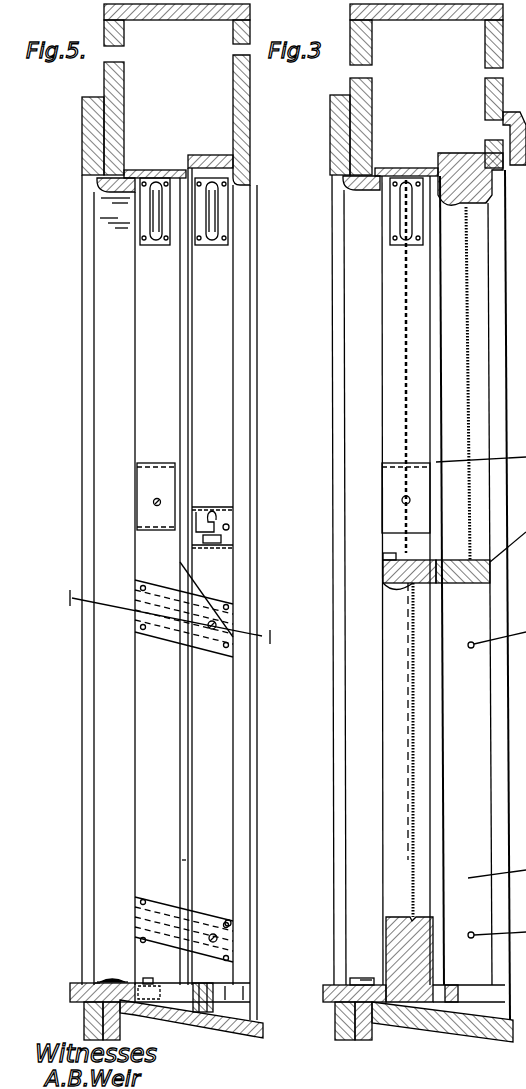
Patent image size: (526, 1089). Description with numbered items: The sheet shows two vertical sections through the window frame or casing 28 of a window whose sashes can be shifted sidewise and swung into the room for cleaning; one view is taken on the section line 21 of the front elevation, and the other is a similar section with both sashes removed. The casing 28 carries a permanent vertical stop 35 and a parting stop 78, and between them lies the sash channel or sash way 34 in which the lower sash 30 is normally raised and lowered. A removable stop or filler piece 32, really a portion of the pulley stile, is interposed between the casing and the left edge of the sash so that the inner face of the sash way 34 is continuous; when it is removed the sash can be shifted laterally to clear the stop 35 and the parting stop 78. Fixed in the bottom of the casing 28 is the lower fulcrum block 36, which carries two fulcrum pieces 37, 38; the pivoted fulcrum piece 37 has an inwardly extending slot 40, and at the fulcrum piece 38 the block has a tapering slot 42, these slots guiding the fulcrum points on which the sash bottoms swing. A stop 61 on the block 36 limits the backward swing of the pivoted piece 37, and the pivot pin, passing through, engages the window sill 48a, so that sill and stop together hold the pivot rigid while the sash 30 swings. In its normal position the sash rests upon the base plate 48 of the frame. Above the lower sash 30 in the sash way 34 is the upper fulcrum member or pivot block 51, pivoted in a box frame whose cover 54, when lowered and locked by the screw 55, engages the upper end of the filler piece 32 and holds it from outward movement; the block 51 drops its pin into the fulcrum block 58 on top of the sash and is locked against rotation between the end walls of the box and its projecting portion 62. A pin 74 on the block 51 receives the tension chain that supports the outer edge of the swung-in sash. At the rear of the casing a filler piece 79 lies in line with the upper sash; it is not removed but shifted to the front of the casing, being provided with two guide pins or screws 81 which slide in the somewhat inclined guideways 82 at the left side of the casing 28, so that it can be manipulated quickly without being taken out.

In FIG. 5, the section line 21 is at (171, 621).
In FIG. 3, the window frame or casing 28 is at (485, 108).
In FIG. 3, the lower sash 30 is at (420, 957).
In FIG. 5, the removable stop or filler piece 32 is at (170, 860).
In FIG. 3, the removable stop or filler piece 32 is at (440, 803).
In FIG. 5, the sash channel or sash way 34 is at (158, 352).
In FIG. 5, the vertical stop 35 is at (108, 288).
In FIG. 5, the lower fulcrum block 36 is at (177, 997).
In FIG. 3, the lower fulcrum block 36 is at (354, 1012).
In FIG. 5, the fulcrum piece 37 is at (120, 980).
In FIG. 3, the fulcrum piece 37 is at (370, 978).
In FIG. 5, the fulcrum piece 38 is at (240, 995).
In FIG. 3, the fulcrum piece 38 is at (455, 998).
In FIG. 5, the inwardly extending slot 40 is at (110, 980).
In FIG. 5, the inwardly extending tapering slot 42 is at (208, 985).
In FIG. 5, the base plate 48 is at (199, 1022).
In FIG. 3, the base plate 48 is at (442, 1027).
In FIG. 5, the window sill 48a is at (97, 982).
In FIG. 3, the window sill 48a is at (350, 982).
In FIG. 5, the upper fulcrum member or pivot block 51 is at (200, 510).
In FIG. 5, the cover 54 is at (145, 493).
In FIG. 3, the cover 54 is at (383, 513).
In FIG. 5, the screw 55 is at (155, 506).
In FIG. 3, the fulcrum block or plate 58 is at (383, 563).
In FIG. 5, the stop 61 is at (148, 979).
In FIG. 5, the projecting portion of box 62 is at (230, 530).
In FIG. 5, the pin 74 is at (222, 510).
In FIG. 5, the parting stop 78 is at (182, 431).
In FIG. 5, the rear filler piece 79 is at (222, 792).
In FIG. 5, the guide pins or screws 81 is at (216, 623).
In FIG. 5, the inclined guideways 82 is at (250, 922).